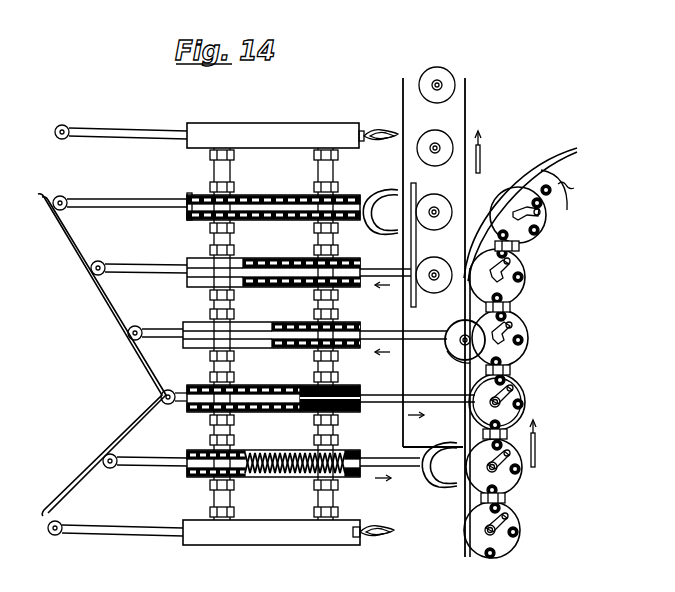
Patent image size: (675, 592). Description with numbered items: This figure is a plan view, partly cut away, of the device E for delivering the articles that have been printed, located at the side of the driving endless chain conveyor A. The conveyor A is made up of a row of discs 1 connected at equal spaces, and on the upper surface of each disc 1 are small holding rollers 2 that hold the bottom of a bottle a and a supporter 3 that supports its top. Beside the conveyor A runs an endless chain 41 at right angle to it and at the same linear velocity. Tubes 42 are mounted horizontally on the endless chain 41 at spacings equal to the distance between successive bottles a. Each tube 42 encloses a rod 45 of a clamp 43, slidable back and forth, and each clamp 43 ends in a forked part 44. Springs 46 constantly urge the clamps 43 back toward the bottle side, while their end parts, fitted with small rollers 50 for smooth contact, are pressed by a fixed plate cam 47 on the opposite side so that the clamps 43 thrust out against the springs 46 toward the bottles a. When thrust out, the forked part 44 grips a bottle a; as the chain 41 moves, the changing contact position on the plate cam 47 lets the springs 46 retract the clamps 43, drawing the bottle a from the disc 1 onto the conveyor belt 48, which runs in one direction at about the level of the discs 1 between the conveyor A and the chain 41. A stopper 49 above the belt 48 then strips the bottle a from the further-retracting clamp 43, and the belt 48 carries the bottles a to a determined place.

The disc 1 is at (523, 356).
The small holding roller 2 is at (526, 340).
The supporter 3 is at (524, 327).
The endless chain 41 is at (232, 367).
The tube 42 is at (292, 123).
The clamp 43 is at (363, 196).
The forked part 44 is at (384, 231).
The rod 45 is at (262, 217).
The spring 46 is at (293, 219).
The fixed plate cam 47 is at (130, 425).
The conveyor belt 48 is at (467, 110).
The stopper 49 is at (417, 246).
The small roller 50 is at (63, 142).
The bottle a is at (455, 328).
The device for delivering the printed articles E is at (380, 380).
The driving endless chain conveyor A is at (505, 508).